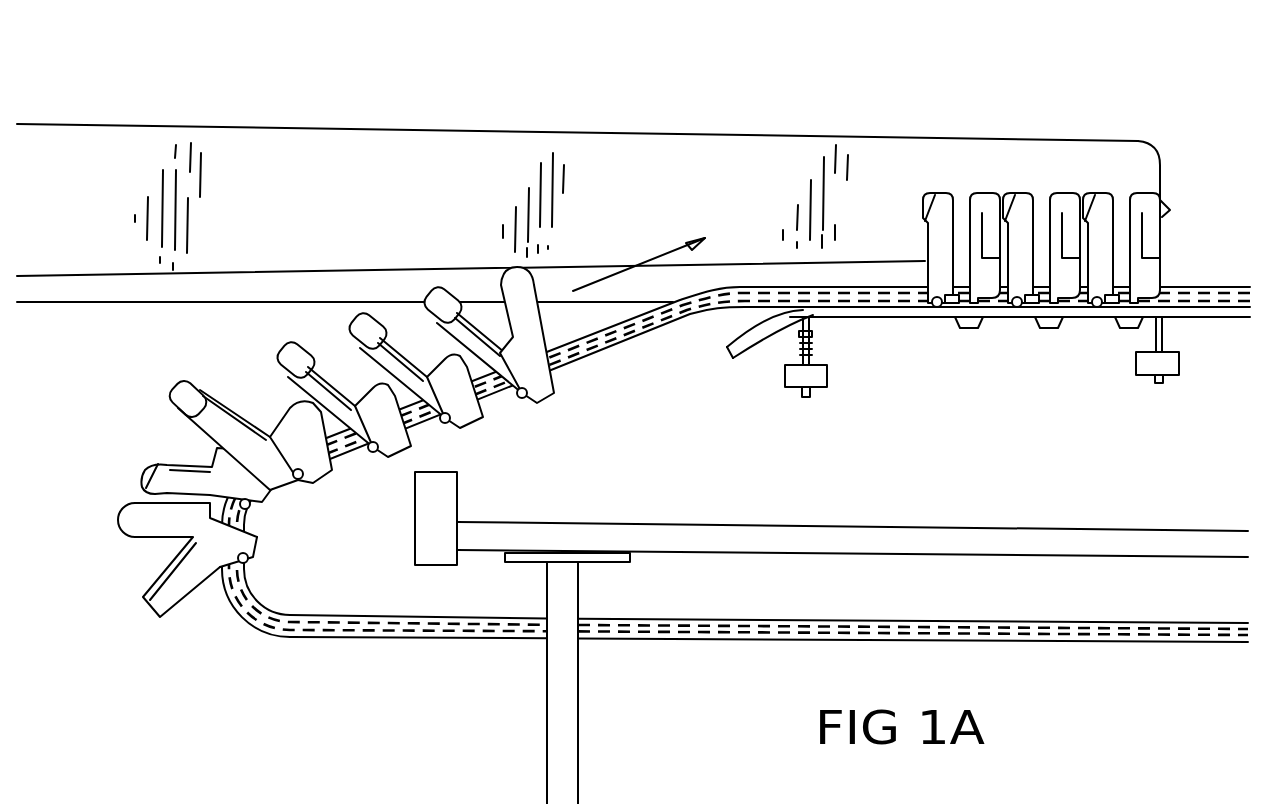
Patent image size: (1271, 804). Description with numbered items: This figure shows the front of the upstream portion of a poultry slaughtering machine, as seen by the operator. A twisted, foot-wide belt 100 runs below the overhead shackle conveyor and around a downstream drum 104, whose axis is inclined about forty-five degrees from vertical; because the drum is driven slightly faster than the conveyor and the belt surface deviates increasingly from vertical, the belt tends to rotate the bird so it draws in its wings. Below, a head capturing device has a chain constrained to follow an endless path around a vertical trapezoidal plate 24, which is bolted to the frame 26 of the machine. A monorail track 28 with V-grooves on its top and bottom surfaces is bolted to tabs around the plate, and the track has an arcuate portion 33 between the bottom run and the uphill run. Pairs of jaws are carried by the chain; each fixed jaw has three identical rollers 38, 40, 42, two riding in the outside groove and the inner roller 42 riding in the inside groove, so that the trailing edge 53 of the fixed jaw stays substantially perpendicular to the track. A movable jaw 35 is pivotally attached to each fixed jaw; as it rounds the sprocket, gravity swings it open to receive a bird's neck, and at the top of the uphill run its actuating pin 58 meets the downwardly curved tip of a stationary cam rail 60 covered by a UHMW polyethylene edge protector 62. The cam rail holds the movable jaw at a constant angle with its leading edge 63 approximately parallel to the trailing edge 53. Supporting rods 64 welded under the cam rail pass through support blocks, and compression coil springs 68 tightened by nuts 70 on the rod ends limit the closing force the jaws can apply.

The belt 100 is at (505, 175).
The downstream drum 104 is at (1162, 140).
The movable jaw 35 is at (140, 472).
The trailing edge 53 is at (143, 563).
The leading edge 63 is at (157, 575).
The actuating pin 58 is at (661, 523).
The arcuate portion 33 is at (277, 633).
The trapezoidal plate 24 is at (343, 595).
The monorail track 28 is at (435, 627).
The frame 26 is at (556, 684).
The roller 38 is at (522, 405).
The inner roller 42 is at (540, 402).
The roller 40 is at (550, 386).
The edge protector 62 is at (739, 392).
The cam rail 60 is at (722, 352).
The supporting rod 64 is at (872, 394).
The compression coil spring 68 is at (822, 349).
The nut 70 is at (815, 393).